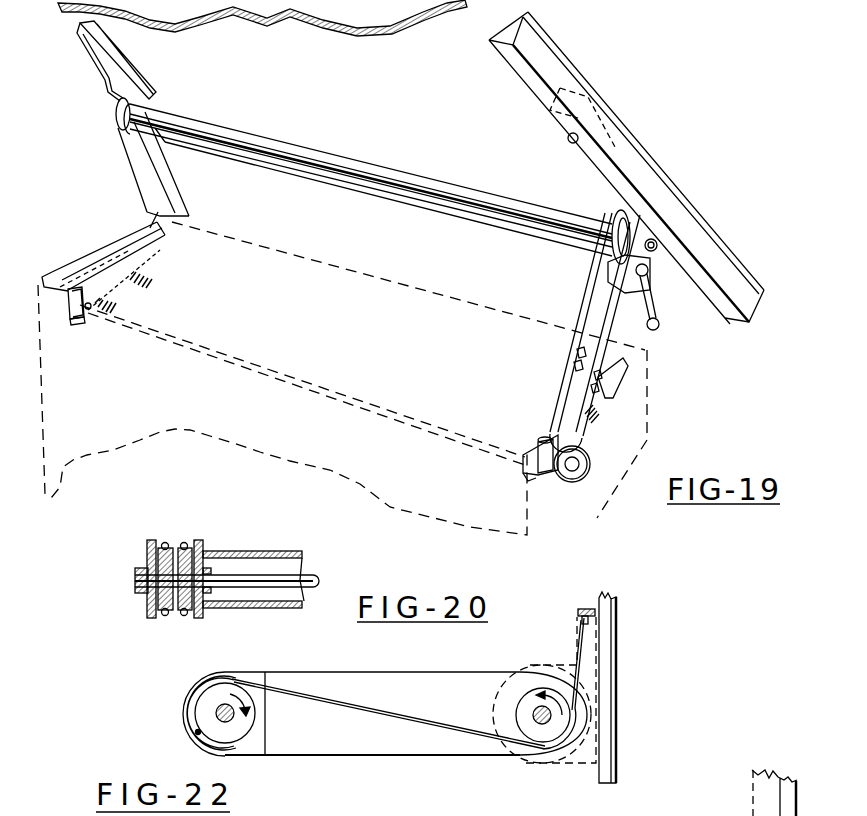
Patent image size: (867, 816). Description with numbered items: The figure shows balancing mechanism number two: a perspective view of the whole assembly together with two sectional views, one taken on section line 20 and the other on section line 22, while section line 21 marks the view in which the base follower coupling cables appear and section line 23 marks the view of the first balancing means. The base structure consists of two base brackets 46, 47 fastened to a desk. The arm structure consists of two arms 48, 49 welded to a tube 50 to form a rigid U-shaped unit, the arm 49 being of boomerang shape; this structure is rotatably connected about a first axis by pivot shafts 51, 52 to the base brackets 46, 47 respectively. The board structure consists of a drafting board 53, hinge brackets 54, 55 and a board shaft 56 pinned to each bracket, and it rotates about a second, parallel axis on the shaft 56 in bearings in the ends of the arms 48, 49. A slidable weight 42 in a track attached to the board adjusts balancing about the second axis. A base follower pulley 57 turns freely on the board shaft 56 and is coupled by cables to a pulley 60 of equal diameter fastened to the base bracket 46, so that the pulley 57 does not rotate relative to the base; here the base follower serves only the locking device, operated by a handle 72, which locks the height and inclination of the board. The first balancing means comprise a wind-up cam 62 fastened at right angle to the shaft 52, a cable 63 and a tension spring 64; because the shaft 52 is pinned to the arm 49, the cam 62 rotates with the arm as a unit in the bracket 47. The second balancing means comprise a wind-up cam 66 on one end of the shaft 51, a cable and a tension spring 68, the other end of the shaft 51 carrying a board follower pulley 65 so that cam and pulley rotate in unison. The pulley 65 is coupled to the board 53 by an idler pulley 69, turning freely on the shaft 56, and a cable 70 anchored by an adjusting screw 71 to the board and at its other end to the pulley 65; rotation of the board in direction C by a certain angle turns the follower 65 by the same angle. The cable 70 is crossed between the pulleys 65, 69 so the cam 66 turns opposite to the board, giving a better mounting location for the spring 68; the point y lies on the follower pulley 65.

In FIG. 22, the section line 20- 20 is at (542, 660).
In FIG. 20, the section line 21- 21 is at (175, 535).
In FIG. 20, the section line 22- 22 is at (158, 530).
In FIG. 19, the section line 23- 23 is at (245, 298).
In FIG. 19, the slidable weight 42 is at (608, 124).
In FIG. 19, the base bracket 46 is at (537, 443).
In FIG. 19, the base bracket 47 is at (158, 233).
In FIG. 19, the arm 48 is at (572, 342).
In FIG. 20, the arm 48 is at (203, 541).
In FIG. 22, the arm 48 is at (300, 672).
In FIG. 19, the arm 49 is at (126, 160).
In FIG. 19, the tube 50 is at (415, 174).
In FIG. 20, the tube 50 is at (280, 553).
In FIG. 19, the pivot shaft 51 is at (585, 467).
In FIG. 22, the pivot shaft 51 is at (217, 710).
In FIG. 19, the pivot shaft 52 is at (78, 307).
In FIG. 19, the drafting board 53 is at (572, 63).
In FIG. 22, the drafting board 53 is at (607, 656).
In FIG. 19, the hinge bracket 54 is at (648, 268).
In FIG. 20, the hinge bracket 54 is at (147, 603).
In FIG. 19, the hinge bracket 55 is at (133, 72).
In FIG. 20, the board shaft 56 is at (313, 577).
In FIG. 22, the board shaft 56 is at (530, 716).
In FIG. 20, the base follower pulley 57 is at (184, 614).
In FIG. 19, the pulley 60 is at (553, 480).
In FIG. 19, the wind-up cam 62 is at (75, 317).
In FIG. 19, the cable 63 is at (88, 307).
In FIG. 19, the tension spring 64 is at (132, 273).
In FIG. 19, the board follower pulley 65 is at (578, 480).
In FIG. 22, the board follower pulley 65 is at (213, 732).
In FIG. 19, the wind-up cam 66 is at (530, 477).
In FIG. 19, the tension spring 68 is at (598, 418).
In FIG. 20, the idler pulley 69 is at (165, 614).
In FIG. 22, the idler pulley 69 is at (557, 717).
In FIG. 22, the cable 70 is at (383, 712).
In FIG. 22, the adjusting screw 71 is at (578, 607).
In FIG. 19, the handle 72 is at (661, 328).
In FIG. 22, the direction C is at (572, 565).
In FIG. 22, the point y is at (198, 732).